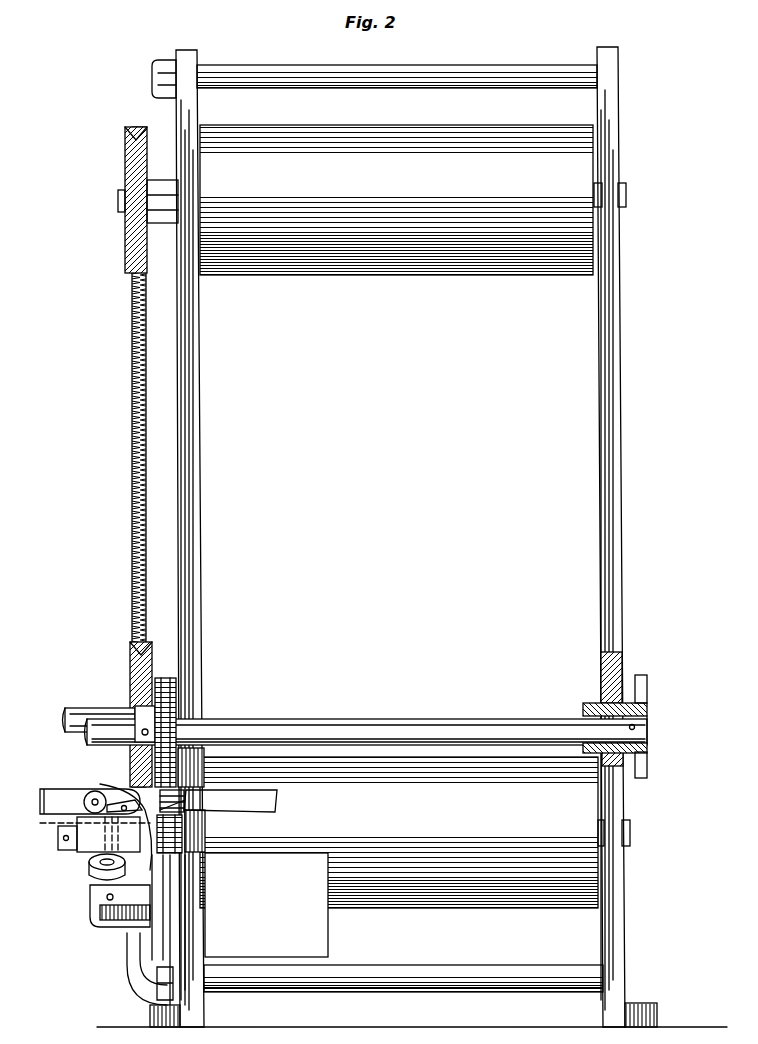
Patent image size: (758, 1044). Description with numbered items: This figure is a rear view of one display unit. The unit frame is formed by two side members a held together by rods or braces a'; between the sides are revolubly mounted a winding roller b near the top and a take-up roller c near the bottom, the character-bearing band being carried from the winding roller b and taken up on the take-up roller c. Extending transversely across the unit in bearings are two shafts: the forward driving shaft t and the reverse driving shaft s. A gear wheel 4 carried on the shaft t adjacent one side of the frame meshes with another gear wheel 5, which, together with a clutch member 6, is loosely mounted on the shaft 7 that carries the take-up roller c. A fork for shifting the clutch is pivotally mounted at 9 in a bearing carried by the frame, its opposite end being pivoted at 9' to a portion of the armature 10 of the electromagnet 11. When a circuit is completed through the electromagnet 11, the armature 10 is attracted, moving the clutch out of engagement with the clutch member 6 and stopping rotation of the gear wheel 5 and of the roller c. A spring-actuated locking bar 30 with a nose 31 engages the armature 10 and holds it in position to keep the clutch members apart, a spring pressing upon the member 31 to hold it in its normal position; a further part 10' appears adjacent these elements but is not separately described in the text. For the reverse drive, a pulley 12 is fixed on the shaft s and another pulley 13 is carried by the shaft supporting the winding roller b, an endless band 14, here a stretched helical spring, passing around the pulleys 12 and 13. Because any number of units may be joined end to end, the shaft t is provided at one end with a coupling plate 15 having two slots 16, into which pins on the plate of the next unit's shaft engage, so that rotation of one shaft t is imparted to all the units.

The side members a is at (403, 537).
The braces a' is at (400, 526).
The winding roller b is at (462, 273).
The take-up roller c is at (460, 903).
The reverse driving shaft s is at (68, 716).
The forward driving shaft t is at (290, 728).
The gear wheel 4 is at (178, 702).
The gear wheel 5 is at (185, 823).
The clutch member 6 is at (150, 808).
The shaft 7 is at (62, 856).
The pivot 9 is at (73, 864).
The pivot connection 9' is at (101, 910).
The armature 10 is at (138, 930).
The pawl 10' is at (210, 790).
The electromagnet 11 is at (325, 947).
The pulley 12 is at (130, 665).
The pulley 13 is at (126, 148).
The endless band 14 is at (132, 441).
The coupling plate 15 is at (650, 748).
The slots 16 is at (648, 692).
The spring-actuated locking bar 30 is at (277, 803).
The nose 31 is at (90, 790).